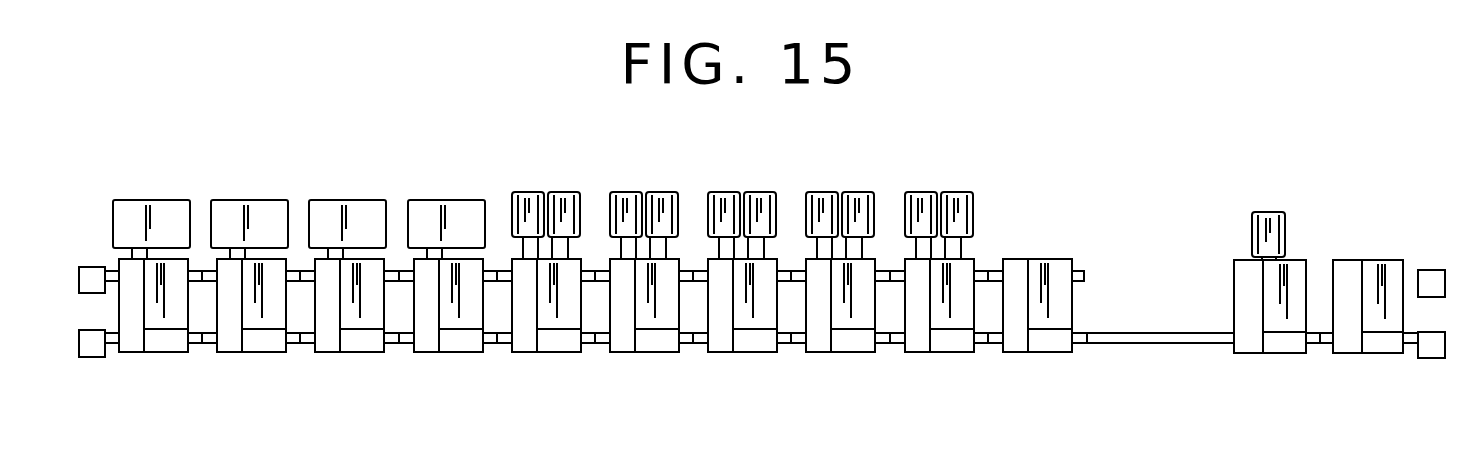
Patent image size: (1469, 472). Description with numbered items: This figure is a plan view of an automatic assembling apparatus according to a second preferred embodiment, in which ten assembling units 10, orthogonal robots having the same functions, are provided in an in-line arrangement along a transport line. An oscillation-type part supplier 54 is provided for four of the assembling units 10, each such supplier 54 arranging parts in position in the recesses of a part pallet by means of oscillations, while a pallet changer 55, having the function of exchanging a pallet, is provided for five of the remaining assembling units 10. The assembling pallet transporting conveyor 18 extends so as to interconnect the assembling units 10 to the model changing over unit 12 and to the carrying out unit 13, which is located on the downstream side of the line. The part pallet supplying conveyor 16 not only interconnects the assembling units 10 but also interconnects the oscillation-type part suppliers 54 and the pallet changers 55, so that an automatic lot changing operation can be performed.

The assembling unit 10 is at (652, 338).
The model changing over unit 12 is at (1385, 323).
The carrying out unit 13 is at (1282, 323).
The part pallet supplying conveyor 16 is at (498, 267).
The assembling pallet transporting conveyor 18 is at (302, 347).
The oscillation-type part supplier 54 is at (327, 205).
The pallet changer 55 is at (722, 193).